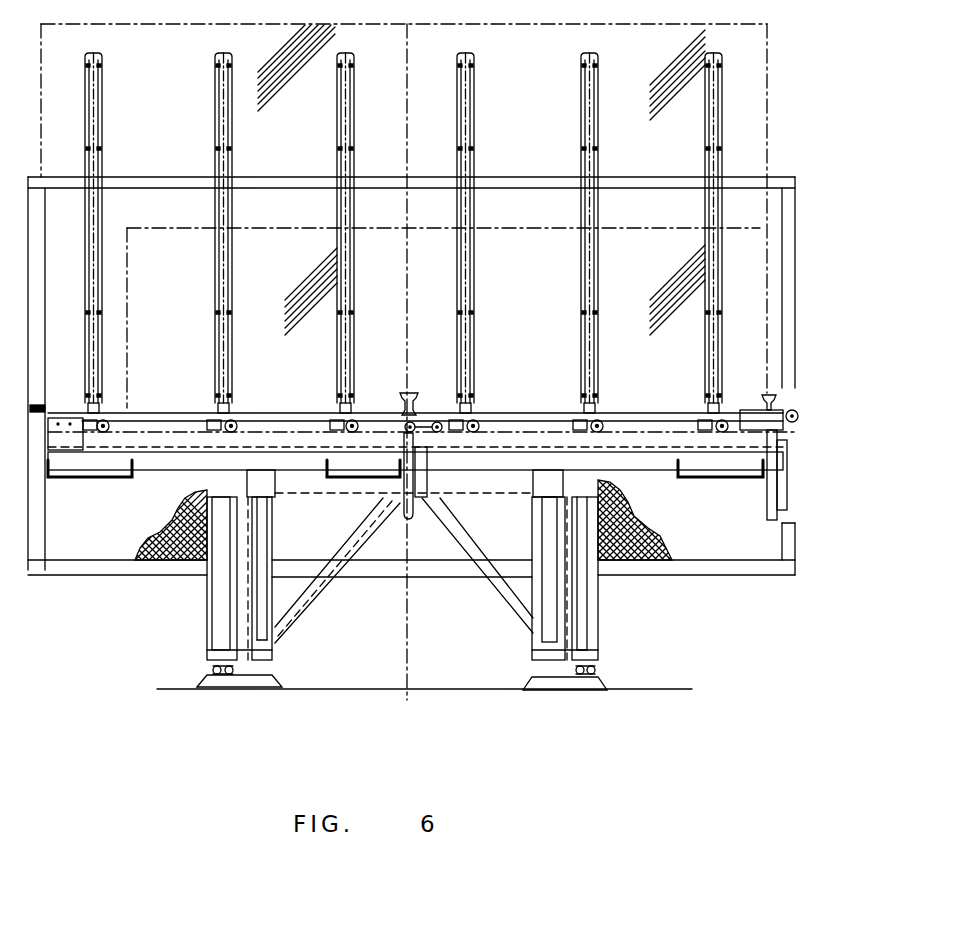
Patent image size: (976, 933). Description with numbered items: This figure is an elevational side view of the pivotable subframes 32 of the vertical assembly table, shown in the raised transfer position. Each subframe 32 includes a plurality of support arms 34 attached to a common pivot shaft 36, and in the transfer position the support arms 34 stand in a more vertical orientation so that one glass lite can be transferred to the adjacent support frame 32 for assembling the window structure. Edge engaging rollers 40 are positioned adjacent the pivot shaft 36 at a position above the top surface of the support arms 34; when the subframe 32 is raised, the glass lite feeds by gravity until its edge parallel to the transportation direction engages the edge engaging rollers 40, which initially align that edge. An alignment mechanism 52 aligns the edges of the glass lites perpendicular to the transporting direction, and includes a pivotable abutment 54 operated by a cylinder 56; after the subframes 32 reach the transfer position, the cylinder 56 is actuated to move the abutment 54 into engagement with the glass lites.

The pivotable subframe 32 is at (788, 145).
The support arms 34 is at (218, 90).
The common pivot shaft 36 is at (92, 440).
The edge engaging rollers 40 is at (107, 420).
The alignment mechanism 52 is at (433, 400).
The pivotable abutment 54 is at (422, 480).
The cylinder 56 is at (448, 470).